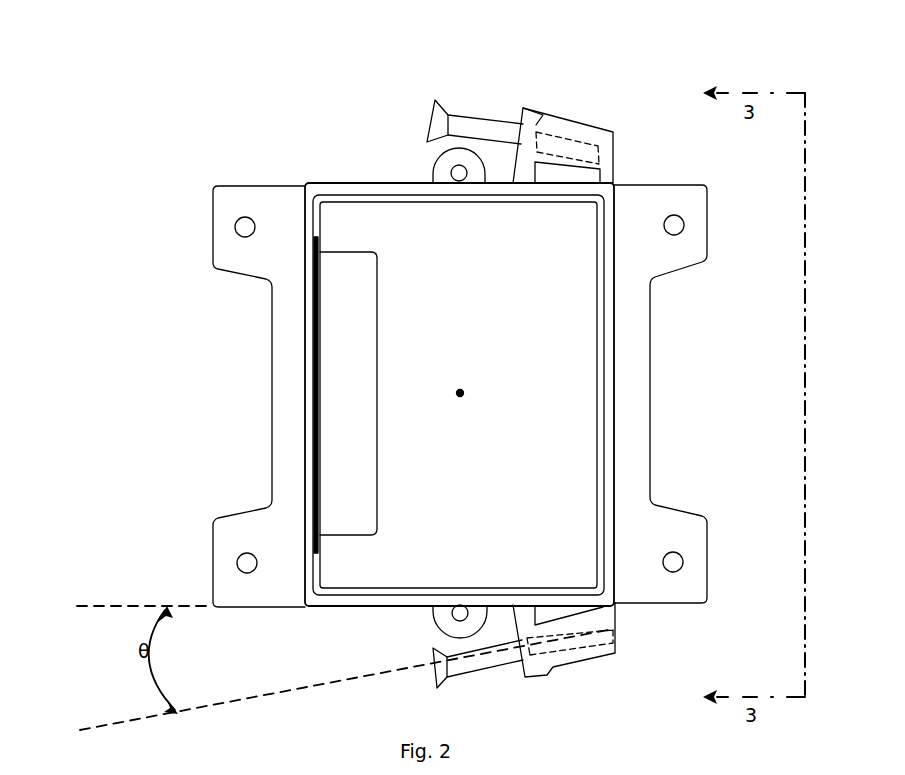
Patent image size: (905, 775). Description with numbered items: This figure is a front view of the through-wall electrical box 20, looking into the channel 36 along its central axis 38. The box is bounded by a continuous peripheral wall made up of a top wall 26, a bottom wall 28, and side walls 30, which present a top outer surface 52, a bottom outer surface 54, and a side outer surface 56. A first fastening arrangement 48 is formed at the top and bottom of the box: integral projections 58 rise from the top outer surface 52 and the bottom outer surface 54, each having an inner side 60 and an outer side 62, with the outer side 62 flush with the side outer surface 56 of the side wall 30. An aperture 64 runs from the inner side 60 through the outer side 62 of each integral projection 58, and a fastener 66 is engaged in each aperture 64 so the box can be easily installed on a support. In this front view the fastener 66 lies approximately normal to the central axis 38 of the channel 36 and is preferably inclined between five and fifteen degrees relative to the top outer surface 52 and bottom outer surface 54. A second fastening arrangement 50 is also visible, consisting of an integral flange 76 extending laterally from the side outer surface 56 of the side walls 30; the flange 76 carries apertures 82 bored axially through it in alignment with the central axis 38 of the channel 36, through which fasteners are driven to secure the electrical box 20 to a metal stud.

The through-wall electrical box 20 is at (152, 308).
The top wall 26 is at (340, 195).
The bottom wall 28 is at (577, 597).
The side walls 30 is at (610, 303).
The channel 36 is at (535, 397).
The central axis 38 is at (462, 395).
The first fastening arrangement 48 is at (547, 85).
The second fastening arrangement 50 is at (237, 174).
The top outer surface 52 is at (388, 182).
The bottom outer surface 54 is at (320, 606).
The side outer surface 56 is at (306, 442).
The integral projections 58 is at (545, 124).
The inner side 60 is at (523, 118).
The outer side 62 is at (615, 168).
The aperture 64 is at (459, 181).
The fastener 66 is at (490, 130).
The integral flange 76 is at (463, 257).
The apertures 82 is at (245, 227).